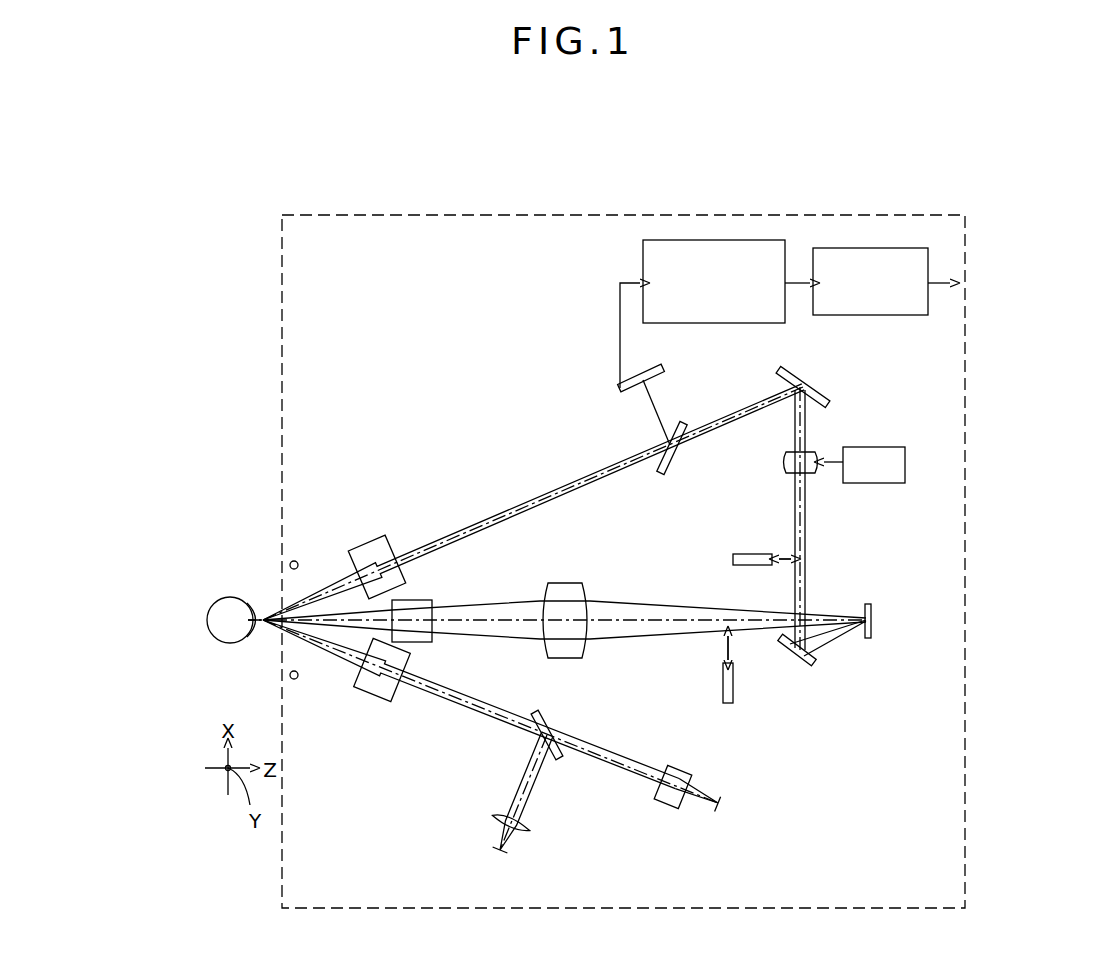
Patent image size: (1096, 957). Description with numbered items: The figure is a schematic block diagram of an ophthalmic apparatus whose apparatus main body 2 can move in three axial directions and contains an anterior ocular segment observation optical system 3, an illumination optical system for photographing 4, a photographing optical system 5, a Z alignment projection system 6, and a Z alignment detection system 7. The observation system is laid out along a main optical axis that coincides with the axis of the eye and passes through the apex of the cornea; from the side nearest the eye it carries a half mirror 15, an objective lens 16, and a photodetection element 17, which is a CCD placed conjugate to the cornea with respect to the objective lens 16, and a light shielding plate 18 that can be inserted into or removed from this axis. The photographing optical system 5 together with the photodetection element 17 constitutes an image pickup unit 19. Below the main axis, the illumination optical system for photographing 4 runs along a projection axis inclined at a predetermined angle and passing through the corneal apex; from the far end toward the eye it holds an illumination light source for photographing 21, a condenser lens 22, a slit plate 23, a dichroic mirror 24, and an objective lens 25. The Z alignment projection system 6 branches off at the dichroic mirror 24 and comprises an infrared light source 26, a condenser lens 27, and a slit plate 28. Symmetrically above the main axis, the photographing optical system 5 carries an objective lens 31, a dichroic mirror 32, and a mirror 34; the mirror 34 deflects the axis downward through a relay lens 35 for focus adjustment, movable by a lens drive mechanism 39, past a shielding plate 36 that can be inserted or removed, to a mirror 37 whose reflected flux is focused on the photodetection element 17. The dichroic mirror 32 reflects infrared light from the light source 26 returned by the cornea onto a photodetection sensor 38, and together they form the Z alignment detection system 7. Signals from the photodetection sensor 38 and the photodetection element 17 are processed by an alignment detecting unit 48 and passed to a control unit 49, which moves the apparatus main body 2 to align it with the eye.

The apparatus main body 2 is at (578, 215).
The anterior ocular segment observation optical system 3 is at (627, 590).
The illumination optical system for photographing 4 is at (640, 747).
The photographing optical system 5 is at (733, 512).
The Z alignment projection system 6 is at (475, 848).
The Z alignment detection system 7 is at (622, 416).
The half mirror 15 is at (432, 604).
The objective lens 16 is at (556, 583).
The photodetection element 17 is at (866, 605).
The light shielding plate 18 is at (737, 696).
The image pickup unit 19 is at (822, 536).
The illumination light source for photographing 21 is at (726, 808).
The condenser lens 22 is at (672, 773).
The slit plate 23 is at (578, 785).
The dichroic mirror 24 is at (540, 718).
The objective lens 25 is at (378, 698).
The light source 26 is at (500, 857).
The condenser lens 27 is at (490, 818).
The slit plate 28 is at (511, 774).
The objective lens 31 is at (367, 545).
The dichroic mirror 32 is at (680, 425).
The mirror 34 is at (818, 390).
The relay lens 35 is at (818, 452).
The shielding plate 36 is at (733, 558).
The mirror 37 is at (812, 662).
The photodetection sensor 38 is at (620, 385).
The lens drive mechanism 39 is at (880, 447).
The alignment detecting unit 48 is at (712, 240).
The control unit 49 is at (856, 248).